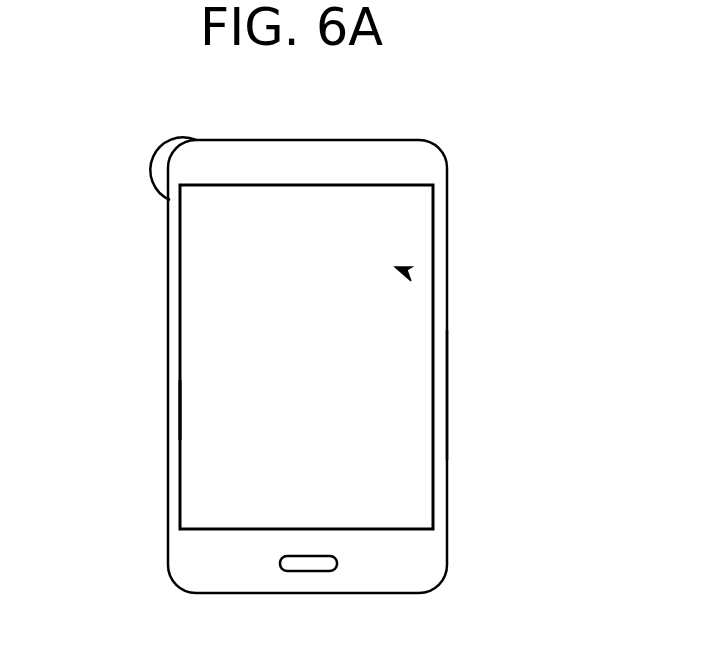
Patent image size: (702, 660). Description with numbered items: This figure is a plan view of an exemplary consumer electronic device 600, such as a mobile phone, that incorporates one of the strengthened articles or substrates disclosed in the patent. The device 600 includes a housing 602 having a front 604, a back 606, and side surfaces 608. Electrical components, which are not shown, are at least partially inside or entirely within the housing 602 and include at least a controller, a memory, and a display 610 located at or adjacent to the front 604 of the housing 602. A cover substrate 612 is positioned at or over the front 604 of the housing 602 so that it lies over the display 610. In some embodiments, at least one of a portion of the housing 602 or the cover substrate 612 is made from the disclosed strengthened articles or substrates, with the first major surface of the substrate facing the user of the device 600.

The consumer electronic device 600 is at (475, 117).
The housing 602 is at (187, 170).
The front 604 is at (423, 566).
The back 606 is at (218, 307).
The side surfaces 608 is at (447, 397).
The display 610 is at (407, 276).
The cover substrate 612 is at (204, 405).